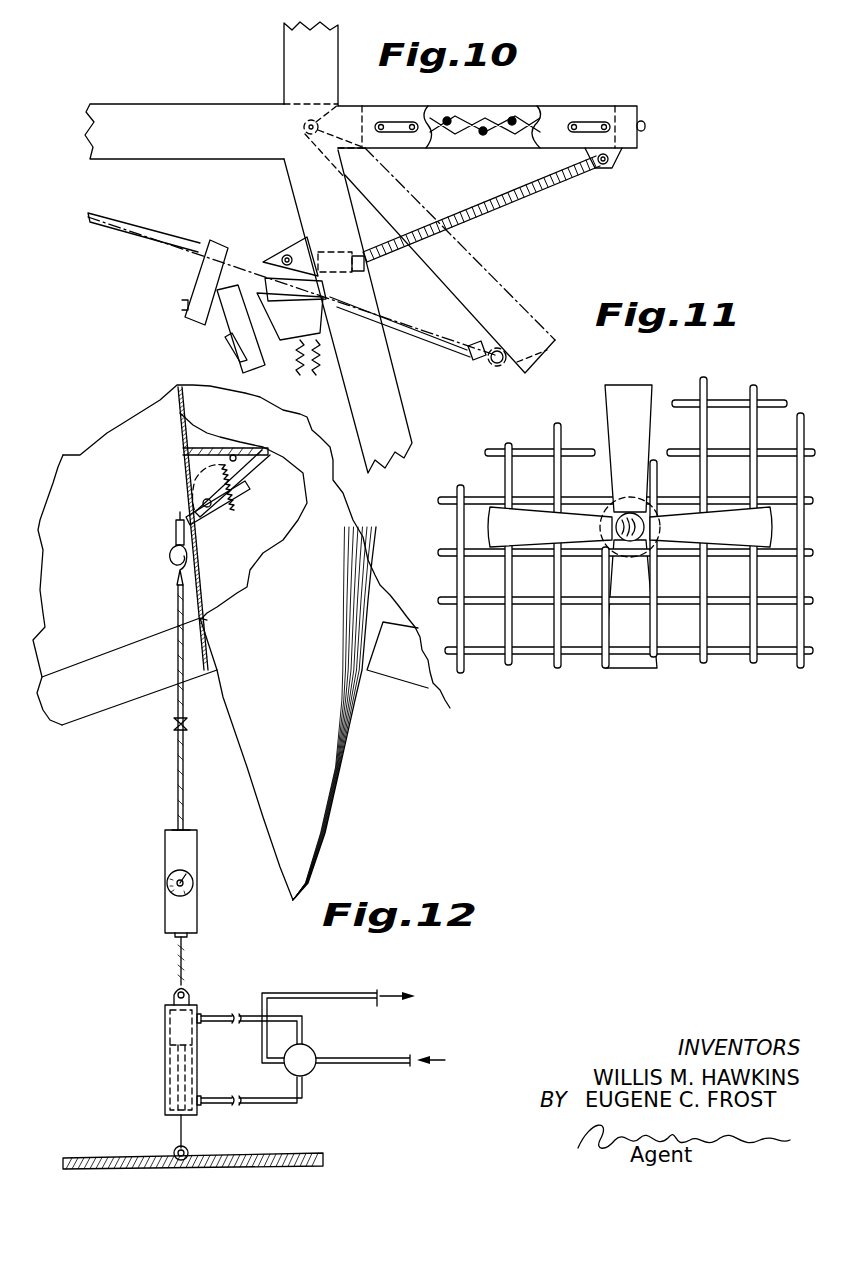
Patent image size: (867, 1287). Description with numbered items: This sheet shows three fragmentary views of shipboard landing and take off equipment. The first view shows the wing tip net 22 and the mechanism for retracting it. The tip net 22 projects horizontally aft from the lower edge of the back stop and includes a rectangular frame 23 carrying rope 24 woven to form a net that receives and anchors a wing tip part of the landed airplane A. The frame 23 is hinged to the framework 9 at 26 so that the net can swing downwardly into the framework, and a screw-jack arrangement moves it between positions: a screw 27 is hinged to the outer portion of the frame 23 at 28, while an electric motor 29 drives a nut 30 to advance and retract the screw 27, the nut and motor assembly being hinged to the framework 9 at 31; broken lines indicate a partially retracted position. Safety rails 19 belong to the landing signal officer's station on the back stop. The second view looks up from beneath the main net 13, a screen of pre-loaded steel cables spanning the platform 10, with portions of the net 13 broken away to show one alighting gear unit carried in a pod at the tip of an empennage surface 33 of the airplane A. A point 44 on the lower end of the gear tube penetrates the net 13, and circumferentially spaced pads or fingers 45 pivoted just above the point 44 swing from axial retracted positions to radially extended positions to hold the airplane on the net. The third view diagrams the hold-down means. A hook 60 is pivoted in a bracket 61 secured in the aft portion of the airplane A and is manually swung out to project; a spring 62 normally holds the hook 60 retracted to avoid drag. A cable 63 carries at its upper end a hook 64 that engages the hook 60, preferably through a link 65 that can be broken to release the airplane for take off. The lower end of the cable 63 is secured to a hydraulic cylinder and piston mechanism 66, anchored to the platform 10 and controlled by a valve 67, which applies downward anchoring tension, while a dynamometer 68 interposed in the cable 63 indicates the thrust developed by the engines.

In FIG. 10, the framework 9 is at (257, 76).
In FIG. 10, the hinge 26 is at (303, 127).
In FIG. 10, the safety rails 19 is at (300, 183).
In FIG. 10, the rectangular frame 23 is at (572, 106).
In FIG. 10, the wing tip net 22 is at (509, 100).
In FIG. 10, the rope 24 is at (446, 112).
In FIG. 10, the hinge 28 is at (603, 168).
In FIG. 10, the screw 27 is at (500, 212).
In FIG. 10, the hinge 31 is at (290, 254).
In FIG. 10, the nut 30 is at (232, 300).
In FIG. 10, the electric motor 29 is at (306, 350).
In FIG. 11, the pads or fingers 45 is at (626, 527).
In FIG. 11, the net 13 is at (742, 605).
In FIG. 11, the point 44 is at (644, 527).
In FIG. 12, the empennage elements or surfaces 33 is at (101, 623).
In FIG. 12, the airplane A is at (335, 750).
In FIG. 12, the bracket 61 is at (248, 478).
In FIG. 12, the spring 62 is at (215, 462).
In FIG. 12, the hook 60 is at (206, 512).
In FIG. 12, the link 65 is at (176, 529).
In FIG. 12, the hook 64 is at (174, 553).
In FIG. 12, the cable 63 is at (176, 763).
In FIG. 12, the dynamometer 68 is at (197, 906).
In FIG. 12, the cylinder and piston mechanism 66 is at (165, 1052).
In FIG. 12, the valve 67 is at (314, 1068).
In FIG. 12, the platform 10 is at (229, 1153).